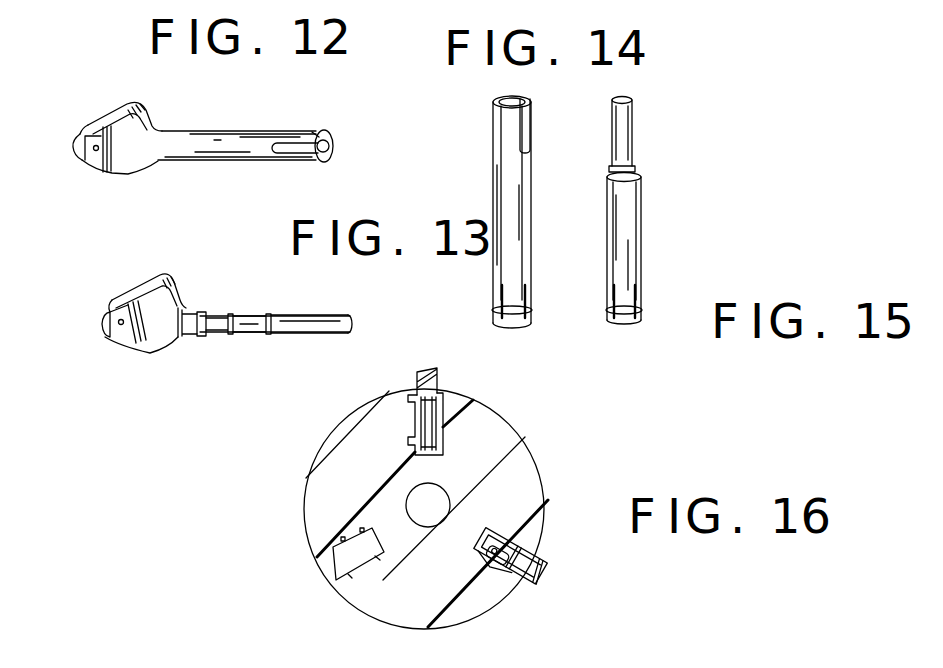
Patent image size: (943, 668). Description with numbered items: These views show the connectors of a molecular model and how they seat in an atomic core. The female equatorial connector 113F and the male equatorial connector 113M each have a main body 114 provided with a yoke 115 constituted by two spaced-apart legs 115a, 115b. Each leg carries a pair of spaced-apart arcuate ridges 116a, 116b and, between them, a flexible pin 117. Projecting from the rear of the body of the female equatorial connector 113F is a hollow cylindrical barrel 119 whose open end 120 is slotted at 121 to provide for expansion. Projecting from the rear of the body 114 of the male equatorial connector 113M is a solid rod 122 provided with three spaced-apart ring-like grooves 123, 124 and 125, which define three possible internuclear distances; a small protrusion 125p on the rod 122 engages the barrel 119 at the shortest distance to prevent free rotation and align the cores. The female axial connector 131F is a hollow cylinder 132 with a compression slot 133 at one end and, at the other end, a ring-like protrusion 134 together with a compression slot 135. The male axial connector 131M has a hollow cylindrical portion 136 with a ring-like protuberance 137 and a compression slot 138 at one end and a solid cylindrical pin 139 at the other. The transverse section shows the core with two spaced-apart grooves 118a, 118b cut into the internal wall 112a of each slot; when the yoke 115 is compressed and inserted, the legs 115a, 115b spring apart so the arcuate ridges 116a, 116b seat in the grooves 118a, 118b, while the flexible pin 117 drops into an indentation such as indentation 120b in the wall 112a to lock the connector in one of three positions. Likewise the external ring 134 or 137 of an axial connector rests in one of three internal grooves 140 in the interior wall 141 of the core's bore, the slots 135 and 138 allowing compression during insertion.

In FIG. 16, the internal wall of slot 112a is at (330, 553).
In FIG. 12, the female equatorial connector 113F is at (258, 122).
In FIG. 13, the male equatorial connector 113M is at (233, 304).
In FIG. 12, the main body 114 is at (178, 128).
In FIG. 13, the main body 114 is at (184, 282).
In FIG. 16, the main body 114 is at (439, 374).
In FIG. 12, the yoke 115 is at (166, 88).
In FIG. 12, the leg 115a is at (100, 122).
In FIG. 16, the leg 115a is at (552, 565).
In FIG. 16, the leg 115b is at (470, 588).
In FIG. 12, the arcuate ridge 116a is at (80, 150).
In FIG. 13, the arcuate ridge 116a is at (103, 325).
In FIG. 16, the arcuate ridge 116a is at (520, 538).
In FIG. 12, the arcuate ridge 116b is at (109, 173).
In FIG. 13, the arcuate ridge 116b is at (133, 345).
In FIG. 16, the arcuate ridge 116b is at (530, 546).
In FIG. 12, the flexible pin 117 is at (94, 152).
In FIG. 13, the flexible pin 117 is at (119, 327).
In FIG. 16, the flexible pin 117 is at (507, 575).
In FIG. 16, the groove 118a is at (350, 578).
In FIG. 16, the groove 118b is at (378, 562).
In FIG. 12, the hollow cylindrical barrel 119 is at (267, 131).
In FIG. 12, the open end of barrel 120 is at (334, 142).
In FIG. 16, the indentation 120b is at (333, 549).
In FIG. 12, the slot 121 is at (268, 162).
In FIG. 13, the solid rod 122 is at (341, 315).
In FIG. 12, the ring-like groove 123 is at (320, 136).
In FIG. 13, the ring-like groove 123 is at (276, 335).
In FIG. 13, the ring-like groove 124 is at (240, 335).
In FIG. 13, the ring-like groove 125 is at (212, 335).
In FIG. 13, the protrusion 125p is at (202, 312).
In FIG. 14, the female axial connector 131F is at (534, 150).
In FIG. 15, the male axial connector 131M is at (604, 206).
In FIG. 14, the hollow cylinder 132 is at (493, 192).
In FIG. 14, the compression slot 133 is at (495, 125).
In FIG. 14, the ring-like protrusion 134 is at (530, 312).
In FIG. 14, the compression slot 135 is at (500, 330).
In FIG. 15, the hollow cylindrical portion 136 is at (643, 184).
In FIG. 15, the ring-like protuberance 137 is at (608, 310).
In FIG. 15, the compression slot 138 is at (637, 332).
In FIG. 15, the solid cylindrical pin 139 is at (633, 120).
In FIG. 16, the internal groove 140 is at (446, 518).
In FIG. 16, the interior wall 141 is at (453, 494).